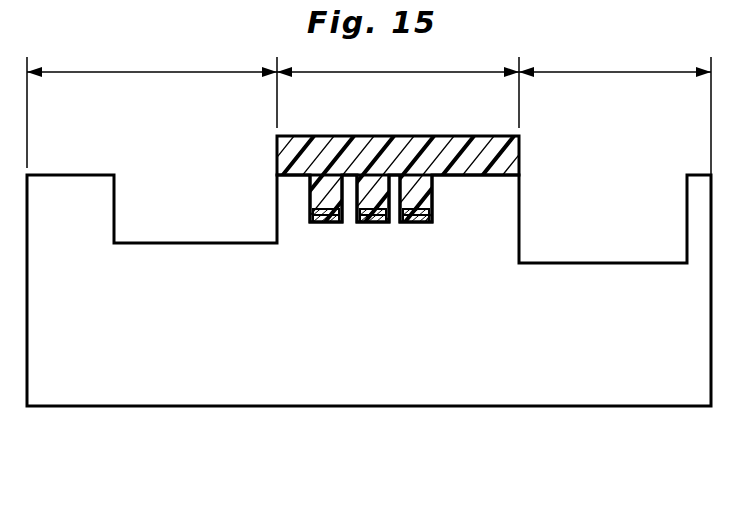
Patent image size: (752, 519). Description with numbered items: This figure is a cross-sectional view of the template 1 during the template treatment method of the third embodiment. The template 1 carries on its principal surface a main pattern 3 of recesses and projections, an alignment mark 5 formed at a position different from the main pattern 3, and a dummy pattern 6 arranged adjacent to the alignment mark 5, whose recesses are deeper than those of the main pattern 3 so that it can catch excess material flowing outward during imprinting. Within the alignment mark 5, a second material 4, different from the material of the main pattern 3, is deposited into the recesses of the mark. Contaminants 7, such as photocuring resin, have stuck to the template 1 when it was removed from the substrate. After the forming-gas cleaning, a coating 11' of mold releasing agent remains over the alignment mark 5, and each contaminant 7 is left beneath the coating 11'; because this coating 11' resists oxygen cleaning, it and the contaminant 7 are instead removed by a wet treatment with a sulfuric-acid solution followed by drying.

The template 1 is at (456, 415).
The main pattern 3 is at (152, 106).
The second material 4 is at (414, 223).
The alignment mark 5 is at (398, 86).
The dummy pattern 6 is at (615, 109).
The contaminant 7 is at (322, 202).
The coating made of a mold releasing agent 11' is at (359, 179).